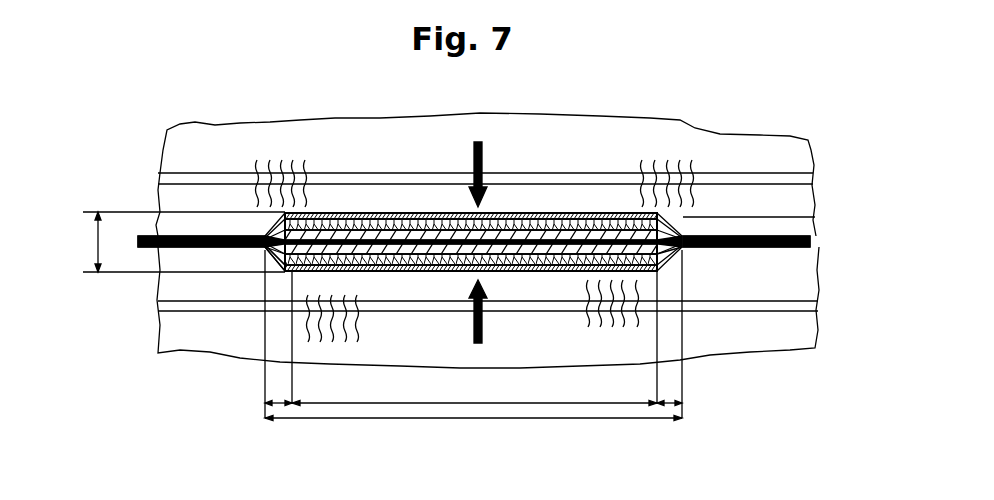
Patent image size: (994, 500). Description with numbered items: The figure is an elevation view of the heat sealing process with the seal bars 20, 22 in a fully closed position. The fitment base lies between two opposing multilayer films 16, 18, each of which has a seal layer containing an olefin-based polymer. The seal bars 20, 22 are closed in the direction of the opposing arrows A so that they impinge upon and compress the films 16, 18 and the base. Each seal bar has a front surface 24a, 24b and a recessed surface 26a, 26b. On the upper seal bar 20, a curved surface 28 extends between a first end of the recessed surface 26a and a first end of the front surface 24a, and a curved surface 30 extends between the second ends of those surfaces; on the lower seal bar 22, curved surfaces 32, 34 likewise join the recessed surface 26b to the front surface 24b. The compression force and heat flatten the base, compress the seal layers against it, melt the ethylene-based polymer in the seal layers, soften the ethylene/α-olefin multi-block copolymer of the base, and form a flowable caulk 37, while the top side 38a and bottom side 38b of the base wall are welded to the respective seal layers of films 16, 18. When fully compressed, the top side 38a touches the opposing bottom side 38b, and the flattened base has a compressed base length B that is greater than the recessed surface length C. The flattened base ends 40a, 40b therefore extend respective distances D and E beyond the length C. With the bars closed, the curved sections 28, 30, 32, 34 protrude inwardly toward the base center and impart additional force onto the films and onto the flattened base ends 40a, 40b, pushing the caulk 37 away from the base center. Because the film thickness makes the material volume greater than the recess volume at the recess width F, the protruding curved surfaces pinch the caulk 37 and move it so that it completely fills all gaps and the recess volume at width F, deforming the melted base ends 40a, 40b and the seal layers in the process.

The multilayer film 16 is at (137, 235).
The multilayer film 18 is at (137, 248).
The seal bar 20 is at (768, 192).
The seal bar 22 is at (792, 294).
The front surface 24a is at (814, 237).
The front surface 24b is at (814, 246).
The recessed surface 26a is at (398, 213).
The recessed surface 26b is at (427, 273).
The curved surface 28 is at (284, 214).
The curved surface 30 is at (668, 218).
The curved surface 32 is at (262, 268).
The curved surface 34 is at (660, 258).
The caulk 37 is at (195, 252).
The top side of base wall 38a is at (445, 218).
The bottom side of base wall 38b is at (537, 273).
The flattened base end 40a is at (263, 258).
The flattened base end 40b is at (750, 217).
The opposing arrows A is at (482, 143).
The compressed base length B is at (412, 418).
The recessed surface length C is at (483, 403).
The distance D is at (275, 405).
The distance E is at (672, 410).
The recess width F is at (97, 242).